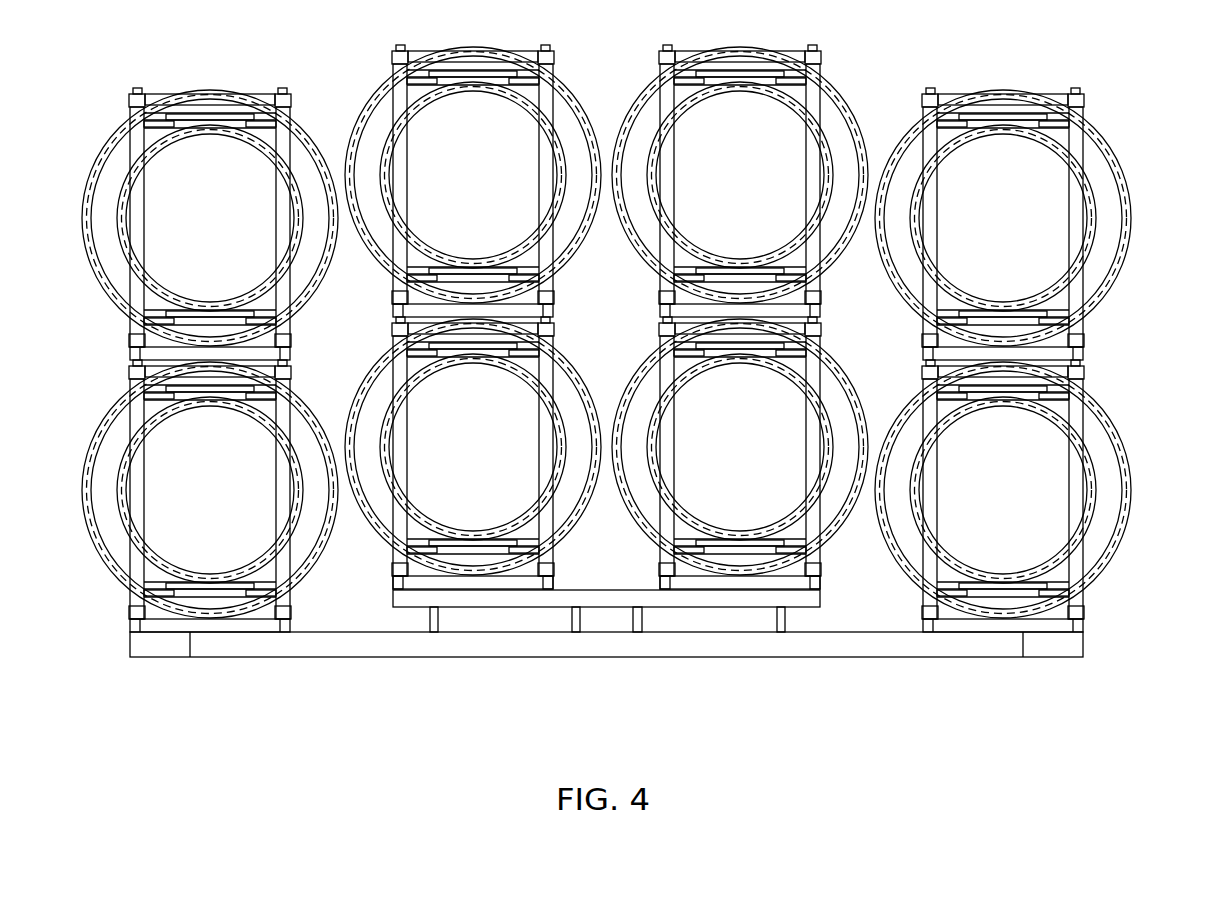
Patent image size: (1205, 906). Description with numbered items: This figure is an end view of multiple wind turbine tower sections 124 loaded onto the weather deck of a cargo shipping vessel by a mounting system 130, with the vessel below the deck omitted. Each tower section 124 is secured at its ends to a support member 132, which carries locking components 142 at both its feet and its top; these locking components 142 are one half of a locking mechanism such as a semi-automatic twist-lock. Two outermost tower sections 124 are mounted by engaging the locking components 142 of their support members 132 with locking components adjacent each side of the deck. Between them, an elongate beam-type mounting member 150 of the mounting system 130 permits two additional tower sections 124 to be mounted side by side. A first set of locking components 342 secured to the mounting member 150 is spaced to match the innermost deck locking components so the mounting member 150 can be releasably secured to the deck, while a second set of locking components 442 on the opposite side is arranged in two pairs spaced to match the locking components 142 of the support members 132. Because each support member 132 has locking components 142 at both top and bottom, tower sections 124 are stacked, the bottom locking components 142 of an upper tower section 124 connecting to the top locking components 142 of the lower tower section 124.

The tower section 124 is at (567, 92).
The support member 132 is at (390, 117).
The locking component 142 is at (393, 578).
The second set of locking components 442 is at (393, 580).
The first set of locking components 342 is at (430, 620).
The mounting member 150 is at (747, 607).
The mounting system 130 is at (465, 633).